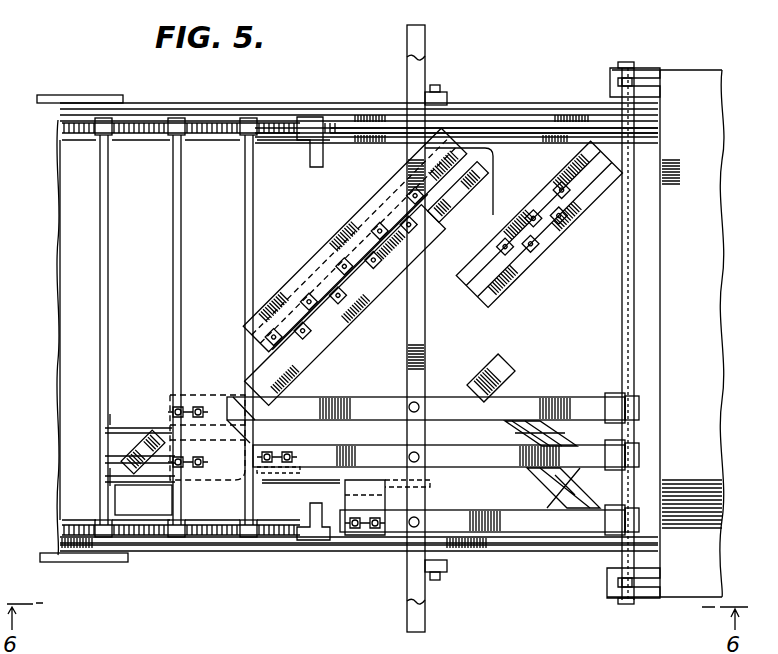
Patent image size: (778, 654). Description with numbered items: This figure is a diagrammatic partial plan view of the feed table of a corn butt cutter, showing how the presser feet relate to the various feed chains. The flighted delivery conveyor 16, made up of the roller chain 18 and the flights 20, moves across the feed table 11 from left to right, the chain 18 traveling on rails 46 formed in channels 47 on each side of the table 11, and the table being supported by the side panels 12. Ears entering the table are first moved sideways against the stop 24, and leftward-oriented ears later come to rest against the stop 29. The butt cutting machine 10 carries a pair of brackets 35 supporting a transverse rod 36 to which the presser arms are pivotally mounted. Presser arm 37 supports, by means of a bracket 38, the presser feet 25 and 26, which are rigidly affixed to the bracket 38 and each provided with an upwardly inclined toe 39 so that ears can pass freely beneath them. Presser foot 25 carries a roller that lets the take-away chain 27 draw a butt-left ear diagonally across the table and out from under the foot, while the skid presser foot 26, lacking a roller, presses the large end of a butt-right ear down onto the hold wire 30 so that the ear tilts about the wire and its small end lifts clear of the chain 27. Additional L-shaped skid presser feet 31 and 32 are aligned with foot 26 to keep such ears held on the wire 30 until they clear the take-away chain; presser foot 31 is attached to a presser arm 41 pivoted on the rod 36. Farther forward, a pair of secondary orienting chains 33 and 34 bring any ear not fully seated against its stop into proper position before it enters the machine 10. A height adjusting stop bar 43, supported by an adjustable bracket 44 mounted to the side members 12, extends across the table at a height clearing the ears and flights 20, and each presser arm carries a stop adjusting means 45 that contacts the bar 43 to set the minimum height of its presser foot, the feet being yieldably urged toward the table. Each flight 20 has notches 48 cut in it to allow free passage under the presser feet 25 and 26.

The butt cutter 10 is at (712, 269).
The feed table 11 is at (72, 308).
The side panels 12 is at (140, 105).
The flighted conveyer 16 is at (52, 135).
The conveyer chain 18 is at (150, 123).
The flights 20 is at (98, 119).
The stop 24 is at (100, 563).
The presser foot 25 is at (123, 429).
The presser foot 26 is at (137, 484).
The take-away conveyer chain 27 is at (366, 216).
The stop 29 is at (62, 96).
The hold wire 30 is at (120, 460).
The presser foot 31 is at (325, 541).
The presser foot 32 is at (396, 534).
The orienting conveyer chain 33 is at (560, 200).
The orienting conveyer chain 34 is at (565, 488).
The brackets 35 is at (645, 69).
The transverse rod 36 is at (637, 221).
The presser arm 37 is at (556, 397).
The bracket 38 is at (166, 403).
The toe 39 is at (110, 430).
The presser arm 41 is at (515, 467).
The height adjusting stop bar 43 is at (407, 590).
The adjustable bracket 44 is at (433, 89).
The stop adjusting means 45 is at (409, 404).
The rails 46 is at (487, 126).
The channels 47 is at (332, 117).
The notches 48 is at (110, 419).